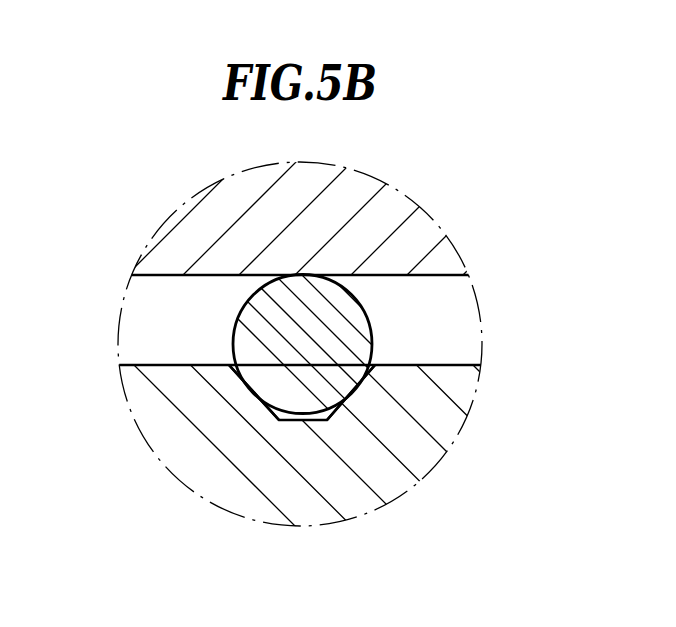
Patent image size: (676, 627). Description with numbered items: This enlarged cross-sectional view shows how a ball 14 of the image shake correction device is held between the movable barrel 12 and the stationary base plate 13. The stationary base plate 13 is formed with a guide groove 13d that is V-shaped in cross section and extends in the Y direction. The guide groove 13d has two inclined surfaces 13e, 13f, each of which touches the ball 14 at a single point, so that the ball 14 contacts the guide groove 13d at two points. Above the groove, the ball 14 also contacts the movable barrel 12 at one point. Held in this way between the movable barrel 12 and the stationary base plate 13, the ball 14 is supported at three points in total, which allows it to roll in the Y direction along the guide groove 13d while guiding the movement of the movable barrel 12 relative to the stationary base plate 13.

The movable barrel 12 is at (440, 258).
The stationary base plate 13 is at (460, 388).
The guide groove 13d is at (420, 568).
The inclined surface 13e is at (347, 395).
The inclined surface 13f is at (255, 397).
The ball 14 is at (253, 318).